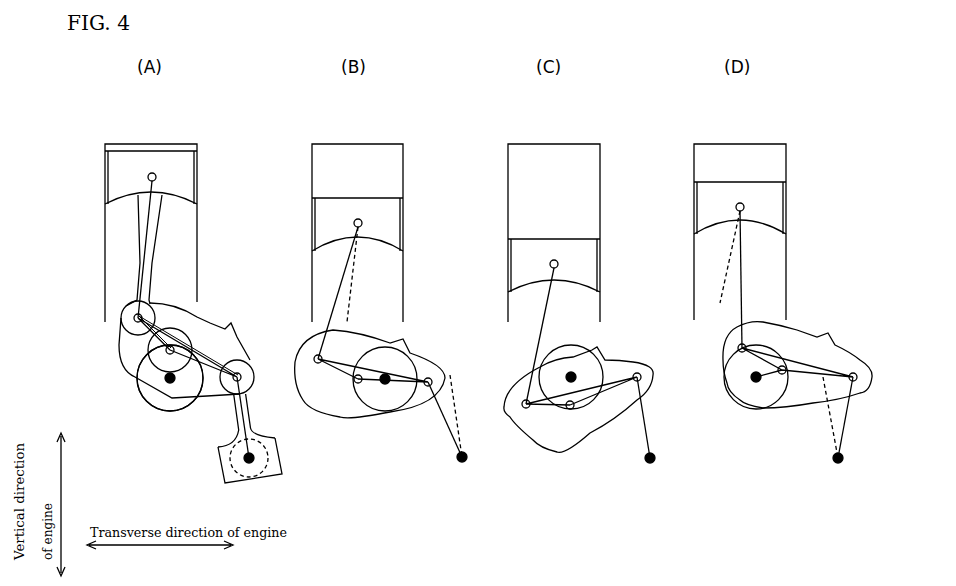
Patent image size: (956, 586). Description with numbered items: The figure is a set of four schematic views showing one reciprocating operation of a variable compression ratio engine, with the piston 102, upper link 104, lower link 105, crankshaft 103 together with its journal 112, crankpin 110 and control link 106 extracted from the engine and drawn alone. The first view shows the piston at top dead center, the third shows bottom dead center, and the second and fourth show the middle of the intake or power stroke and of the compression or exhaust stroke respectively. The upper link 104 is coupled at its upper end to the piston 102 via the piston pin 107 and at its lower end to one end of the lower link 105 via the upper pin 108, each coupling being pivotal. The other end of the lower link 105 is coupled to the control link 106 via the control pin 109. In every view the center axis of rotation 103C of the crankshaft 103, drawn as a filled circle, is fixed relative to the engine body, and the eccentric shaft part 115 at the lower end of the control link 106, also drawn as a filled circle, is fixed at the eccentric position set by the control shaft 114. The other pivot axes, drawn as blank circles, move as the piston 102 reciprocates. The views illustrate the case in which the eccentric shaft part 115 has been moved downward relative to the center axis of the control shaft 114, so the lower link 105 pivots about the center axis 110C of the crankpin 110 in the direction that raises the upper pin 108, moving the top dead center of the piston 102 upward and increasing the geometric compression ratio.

The piston 102 is at (108, 179).
The crankshaft 103 is at (140, 392).
The journal 112 is at (134, 378).
The center axis of rotation 103C is at (170, 383).
The upper link 104 is at (138, 252).
The lower link 105 is at (125, 346).
The control link 106 is at (238, 425).
The piston pin 107 is at (156, 176).
The upper pin 108 is at (132, 312).
The control pin 109 is at (248, 367).
The crankpin 110 is at (212, 324).
The center axis of the crankpin 110C is at (185, 340).
The control shaft 114 is at (270, 461).
The eccentric shaft part 115 is at (249, 470).